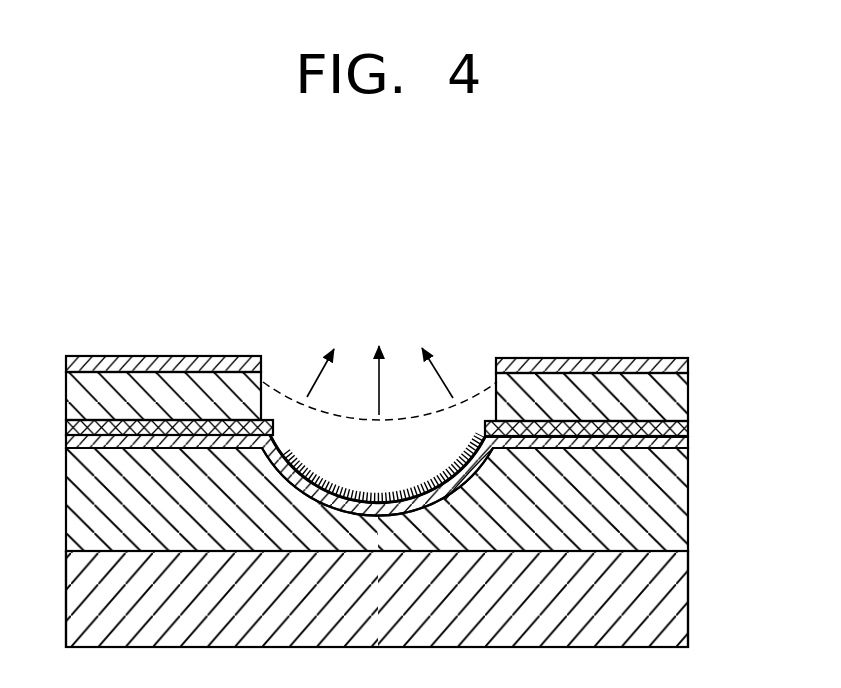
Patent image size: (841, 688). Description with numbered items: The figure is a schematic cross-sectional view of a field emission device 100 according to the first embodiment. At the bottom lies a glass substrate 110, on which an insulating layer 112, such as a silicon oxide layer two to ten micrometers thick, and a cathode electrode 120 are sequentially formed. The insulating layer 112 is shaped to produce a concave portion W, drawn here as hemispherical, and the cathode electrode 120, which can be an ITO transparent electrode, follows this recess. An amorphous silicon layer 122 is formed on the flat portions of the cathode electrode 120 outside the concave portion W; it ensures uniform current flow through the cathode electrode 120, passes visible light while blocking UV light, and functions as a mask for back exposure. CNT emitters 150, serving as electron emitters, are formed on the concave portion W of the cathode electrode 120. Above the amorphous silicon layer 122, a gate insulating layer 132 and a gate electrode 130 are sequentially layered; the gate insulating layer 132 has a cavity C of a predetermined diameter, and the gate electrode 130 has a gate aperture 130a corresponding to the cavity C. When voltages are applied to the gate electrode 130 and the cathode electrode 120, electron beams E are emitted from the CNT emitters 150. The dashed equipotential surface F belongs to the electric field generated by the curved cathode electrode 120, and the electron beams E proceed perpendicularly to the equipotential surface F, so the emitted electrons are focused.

The field emission device 100 is at (113, 160).
The glass substrate 110 is at (688, 598).
The insulating layer 112 is at (688, 503).
The cathode electrode 120 is at (688, 446).
The amorphous silicon layer 122 is at (688, 430).
The gate electrode 130 is at (688, 366).
The gate insulating layer 132 is at (688, 401).
The gate aperture 130a is at (263, 383).
The CNT emitters 150 is at (393, 497).
The concave portion W is at (347, 493).
The cavity C is at (268, 384).
The electron beams E is at (327, 376).
The equipotential surface F is at (410, 413).